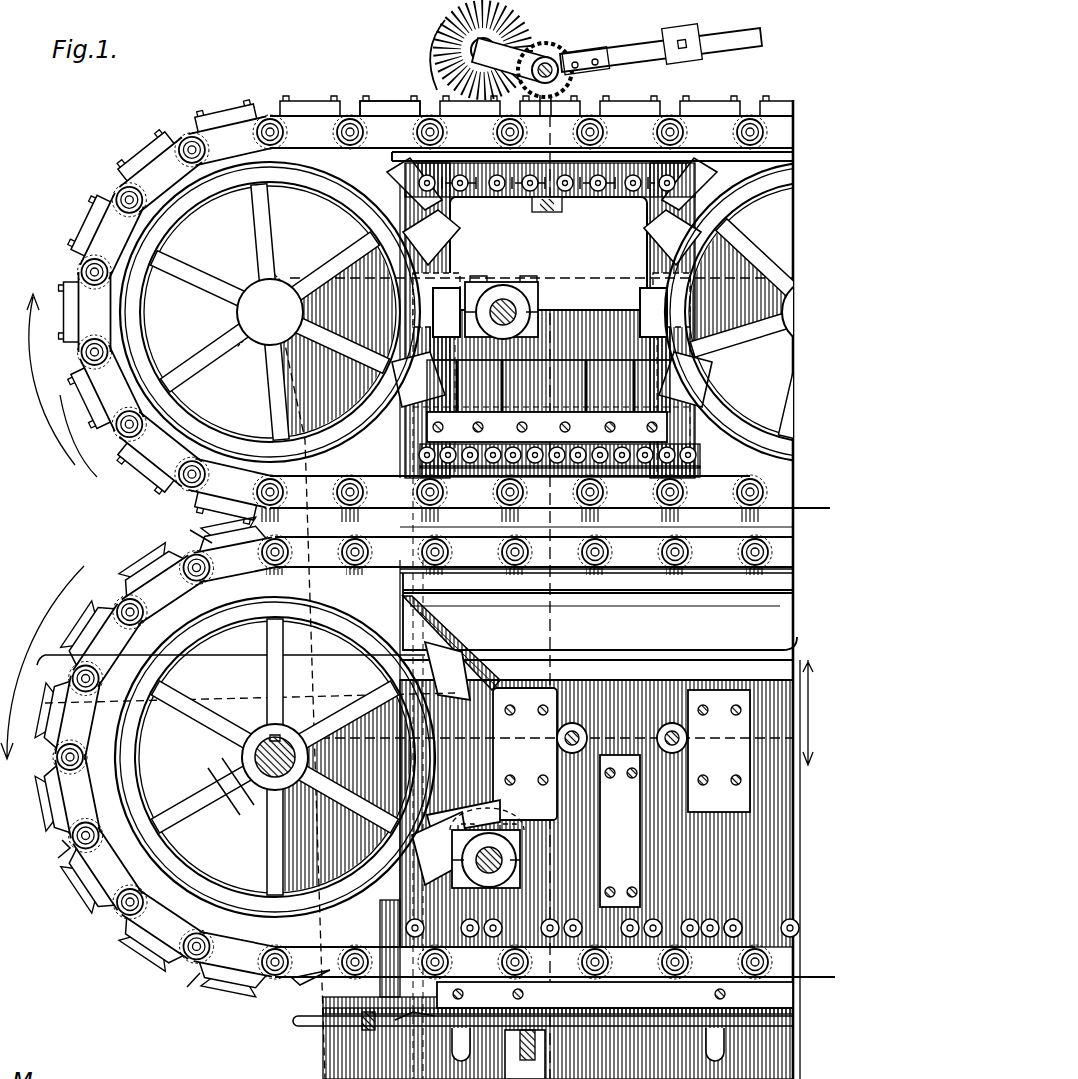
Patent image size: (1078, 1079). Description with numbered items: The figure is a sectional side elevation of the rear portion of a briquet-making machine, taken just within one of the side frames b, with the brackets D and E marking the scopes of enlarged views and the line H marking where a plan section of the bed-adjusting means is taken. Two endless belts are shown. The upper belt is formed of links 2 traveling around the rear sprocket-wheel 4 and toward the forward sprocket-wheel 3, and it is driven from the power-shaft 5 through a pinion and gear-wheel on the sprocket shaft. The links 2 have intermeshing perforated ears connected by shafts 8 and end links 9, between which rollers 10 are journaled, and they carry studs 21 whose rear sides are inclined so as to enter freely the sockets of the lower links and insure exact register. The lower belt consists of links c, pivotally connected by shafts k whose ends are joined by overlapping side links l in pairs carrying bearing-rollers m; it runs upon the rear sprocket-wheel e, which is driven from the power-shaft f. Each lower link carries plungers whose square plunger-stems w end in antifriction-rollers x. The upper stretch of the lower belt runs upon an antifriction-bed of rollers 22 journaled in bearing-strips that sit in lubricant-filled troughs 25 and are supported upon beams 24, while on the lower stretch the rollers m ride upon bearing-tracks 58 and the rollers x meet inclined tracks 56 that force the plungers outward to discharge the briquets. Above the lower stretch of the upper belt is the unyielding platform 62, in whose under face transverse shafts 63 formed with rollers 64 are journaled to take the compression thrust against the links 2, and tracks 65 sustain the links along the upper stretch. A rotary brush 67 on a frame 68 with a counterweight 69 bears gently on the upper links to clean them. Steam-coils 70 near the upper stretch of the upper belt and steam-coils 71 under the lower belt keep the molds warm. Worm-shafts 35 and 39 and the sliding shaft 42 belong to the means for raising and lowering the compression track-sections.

The links 2 is at (110, 200).
The forward sprocket-wheel 3 is at (755, 262).
The rear sprocket-wheel 4 is at (213, 270).
The power-shaft 5 is at (504, 298).
The shafts 8 is at (425, 116).
The end links 9 is at (300, 130).
The rollers 10 is at (173, 140).
The studs 21 is at (322, 102).
The antifriction-rollers 22 is at (748, 571).
The beams 24 is at (461, 645).
The troughs 25 is at (646, 584).
The worm-shaft 35 is at (668, 724).
The worm-shaft 39 is at (572, 724).
The rotary and longitudinally-sliding shaft 42 is at (541, 742).
The inclined frames or tracks 56 is at (542, 918).
The bearing-tracks 58 is at (562, 977).
The unyielding platform 62 is at (551, 386).
The transverse shafts 63 is at (493, 455).
The rollers 64 is at (630, 455).
The tracks 65 is at (610, 157).
The rotary brush 67 is at (443, 24).
The frame 68 is at (530, 42).
The counterweight 69 is at (673, 38).
The steam-coils 70 is at (490, 192).
The steam-coils 71 is at (413, 1020).
The side frame b is at (332, 1040).
The links c is at (247, 766).
The bracket D is at (232, 644).
The bracket E is at (604, 630).
The rear sprocket-wheel e is at (217, 800).
The power-shaft f is at (497, 850).
The section line H is at (816, 712).
The shafts k is at (67, 845).
The side links l is at (152, 588).
The bearing-rollers m is at (268, 560).
The plunger-stem w is at (689, 934).
The antifriction-rollers x is at (733, 925).